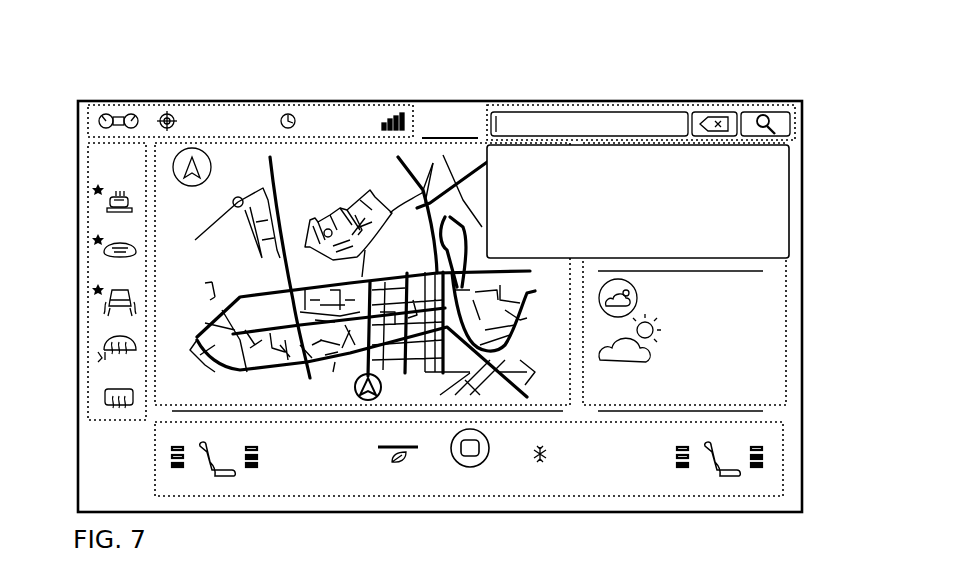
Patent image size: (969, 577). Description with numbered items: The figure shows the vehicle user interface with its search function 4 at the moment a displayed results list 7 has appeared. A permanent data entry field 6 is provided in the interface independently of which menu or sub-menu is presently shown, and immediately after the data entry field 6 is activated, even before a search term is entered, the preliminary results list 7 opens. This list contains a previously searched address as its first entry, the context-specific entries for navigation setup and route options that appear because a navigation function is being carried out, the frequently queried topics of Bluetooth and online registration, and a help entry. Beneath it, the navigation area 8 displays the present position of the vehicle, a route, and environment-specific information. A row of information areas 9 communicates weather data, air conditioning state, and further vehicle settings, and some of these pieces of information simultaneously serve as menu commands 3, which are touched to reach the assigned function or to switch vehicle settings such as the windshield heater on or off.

The menu commands 3 is at (103, 205).
The search function 4 is at (690, 108).
The data entry field 6 is at (573, 123).
The results list 7 is at (788, 189).
The navigation area 8 is at (350, 145).
The information areas 9 is at (88, 123).